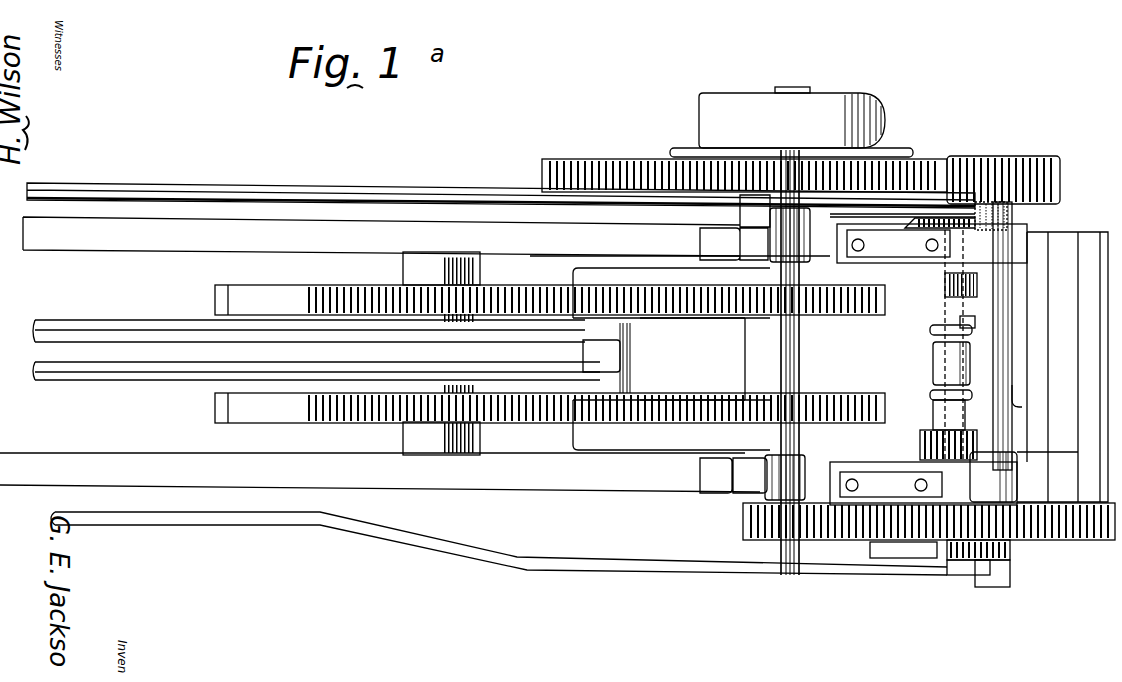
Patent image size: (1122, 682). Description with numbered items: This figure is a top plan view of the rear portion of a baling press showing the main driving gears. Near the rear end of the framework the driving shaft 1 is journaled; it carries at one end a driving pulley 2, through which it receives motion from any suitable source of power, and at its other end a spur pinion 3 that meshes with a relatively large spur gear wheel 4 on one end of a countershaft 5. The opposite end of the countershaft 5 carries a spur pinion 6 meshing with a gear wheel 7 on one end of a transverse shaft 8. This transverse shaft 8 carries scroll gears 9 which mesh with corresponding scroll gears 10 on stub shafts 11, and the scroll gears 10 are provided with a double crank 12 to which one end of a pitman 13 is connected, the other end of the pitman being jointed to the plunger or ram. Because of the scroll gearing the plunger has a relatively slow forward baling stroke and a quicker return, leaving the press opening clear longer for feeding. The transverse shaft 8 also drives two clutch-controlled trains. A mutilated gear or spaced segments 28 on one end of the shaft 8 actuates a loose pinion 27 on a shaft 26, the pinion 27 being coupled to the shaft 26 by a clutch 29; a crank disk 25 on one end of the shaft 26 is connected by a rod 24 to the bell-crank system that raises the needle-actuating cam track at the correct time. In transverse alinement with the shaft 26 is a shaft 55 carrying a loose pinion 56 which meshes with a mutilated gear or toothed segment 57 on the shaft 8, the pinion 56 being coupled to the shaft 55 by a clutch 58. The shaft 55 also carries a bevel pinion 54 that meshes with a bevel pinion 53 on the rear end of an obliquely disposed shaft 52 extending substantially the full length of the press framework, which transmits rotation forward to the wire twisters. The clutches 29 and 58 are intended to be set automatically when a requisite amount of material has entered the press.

The driving shaft 1 is at (810, 92).
The driving pulley 2 is at (880, 135).
The spur pinion 3 is at (797, 540).
The spur gear wheel 4 is at (1072, 540).
The countershaft 5 is at (1007, 312).
The spur pinion 6 is at (1038, 170).
The gear wheel 7 is at (653, 150).
The transverse shaft 8 is at (765, 382).
The scroll gears 9 is at (692, 386).
The scroll gears 10 is at (355, 292).
The stub shafts 11 is at (470, 268).
The double crank 12 is at (620, 408).
The pitman 13 is at (165, 355).
The rod 24 is at (505, 560).
The crank disk 25 is at (980, 565).
The shaft 26 is at (935, 388).
The loose pinion 27 is at (977, 437).
The mutilated gear 28 is at (718, 440).
The clutch 29 is at (970, 405).
The obliquely disposed shaft 52 is at (290, 192).
The bevel pinion 53 is at (990, 205).
The bevel pinion 54 is at (925, 218).
The shaft 55 is at (935, 336).
The loose pinion 56 is at (945, 292).
The mutilated gear 57 is at (692, 272).
The clutch 58 is at (970, 327).